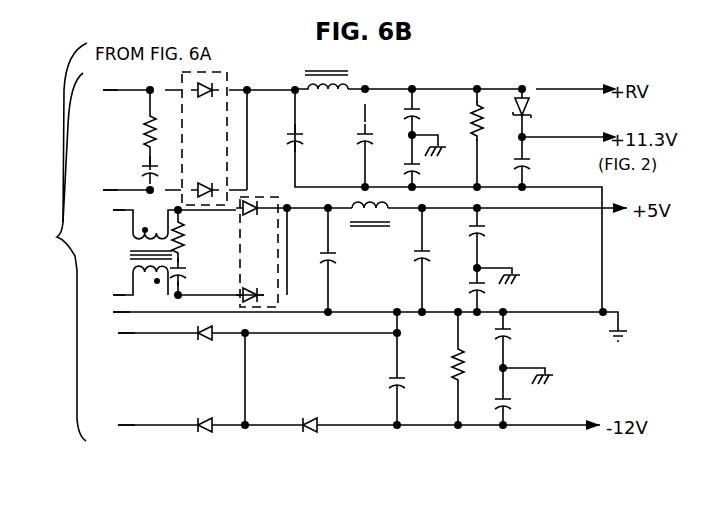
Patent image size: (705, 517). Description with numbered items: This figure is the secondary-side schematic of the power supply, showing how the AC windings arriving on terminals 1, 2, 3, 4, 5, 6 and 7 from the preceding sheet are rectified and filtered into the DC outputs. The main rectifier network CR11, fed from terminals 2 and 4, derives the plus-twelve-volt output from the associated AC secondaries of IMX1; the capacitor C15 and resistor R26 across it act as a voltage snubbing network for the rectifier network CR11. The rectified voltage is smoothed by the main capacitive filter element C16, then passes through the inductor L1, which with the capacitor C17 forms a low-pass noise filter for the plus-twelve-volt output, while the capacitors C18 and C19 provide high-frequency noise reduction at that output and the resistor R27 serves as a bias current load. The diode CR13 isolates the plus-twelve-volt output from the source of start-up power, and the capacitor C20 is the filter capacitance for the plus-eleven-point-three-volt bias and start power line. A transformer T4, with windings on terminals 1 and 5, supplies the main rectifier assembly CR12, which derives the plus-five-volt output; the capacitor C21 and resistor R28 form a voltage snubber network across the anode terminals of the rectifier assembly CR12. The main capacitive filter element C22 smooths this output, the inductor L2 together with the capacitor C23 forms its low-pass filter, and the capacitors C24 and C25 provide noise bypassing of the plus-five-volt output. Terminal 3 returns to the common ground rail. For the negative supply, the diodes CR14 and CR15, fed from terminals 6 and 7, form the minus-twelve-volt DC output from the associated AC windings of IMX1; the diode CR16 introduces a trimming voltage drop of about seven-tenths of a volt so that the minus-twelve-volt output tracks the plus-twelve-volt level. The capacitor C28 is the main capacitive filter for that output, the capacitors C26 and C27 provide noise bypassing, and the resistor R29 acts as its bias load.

The main rectifier network CR11 is at (167, 133).
The snubber resistor R26 is at (126, 128).
The snubber capacitor C15 is at (129, 162).
The low-pass filter inductor L1 is at (321, 69).
The main capacitive filter element C16 is at (288, 130).
The low-pass filter capacitor C17 is at (342, 130).
The high-frequency noise reduction capacitor C18 is at (431, 113).
The high-frequency noise reduction capacitor C19 is at (400, 168).
The bias current load R27 is at (481, 126).
The isolation diode CR13 is at (549, 107).
The filter capacitance C20 is at (543, 163).
The transformer T4 is at (134, 252).
The snubber resistor R28 is at (197, 238).
The main rectifier assembly CR12 is at (232, 252).
The snubber capacitor C21 is at (201, 275).
The low-pass filter inductor L2 is at (370, 230).
The main capacitive filter element C22 is at (341, 254).
The low-pass filter capacitor C23 is at (403, 265).
The noise bypass capacitor C24 is at (499, 230).
The noise bypass capacitor C25 is at (456, 287).
The noise bypass capacitor C26 is at (524, 333).
The noise bypass capacitor C27 is at (524, 404).
The main capacitive filter C28 is at (372, 374).
The bias load R29 is at (434, 365).
The rectifier diode CR14 is at (204, 348).
The rectifier diode CR15 is at (212, 441).
The trimming diode CR16 is at (319, 441).
The terminal 1 from FIG. 6A 1 is at (112, 209).
The terminal 2 from FIG. 6A 2 is at (102, 91).
The terminal 3 from FIG. 6A 3 is at (115, 314).
The terminal 4 from FIG. 6A 4 is at (101, 190).
The terminal 5 from FIG. 6A 5 is at (112, 296).
The terminal 6 from FIG. 6A 6 is at (117, 334).
The terminal 7 from FIG. 6A 7 is at (117, 426).